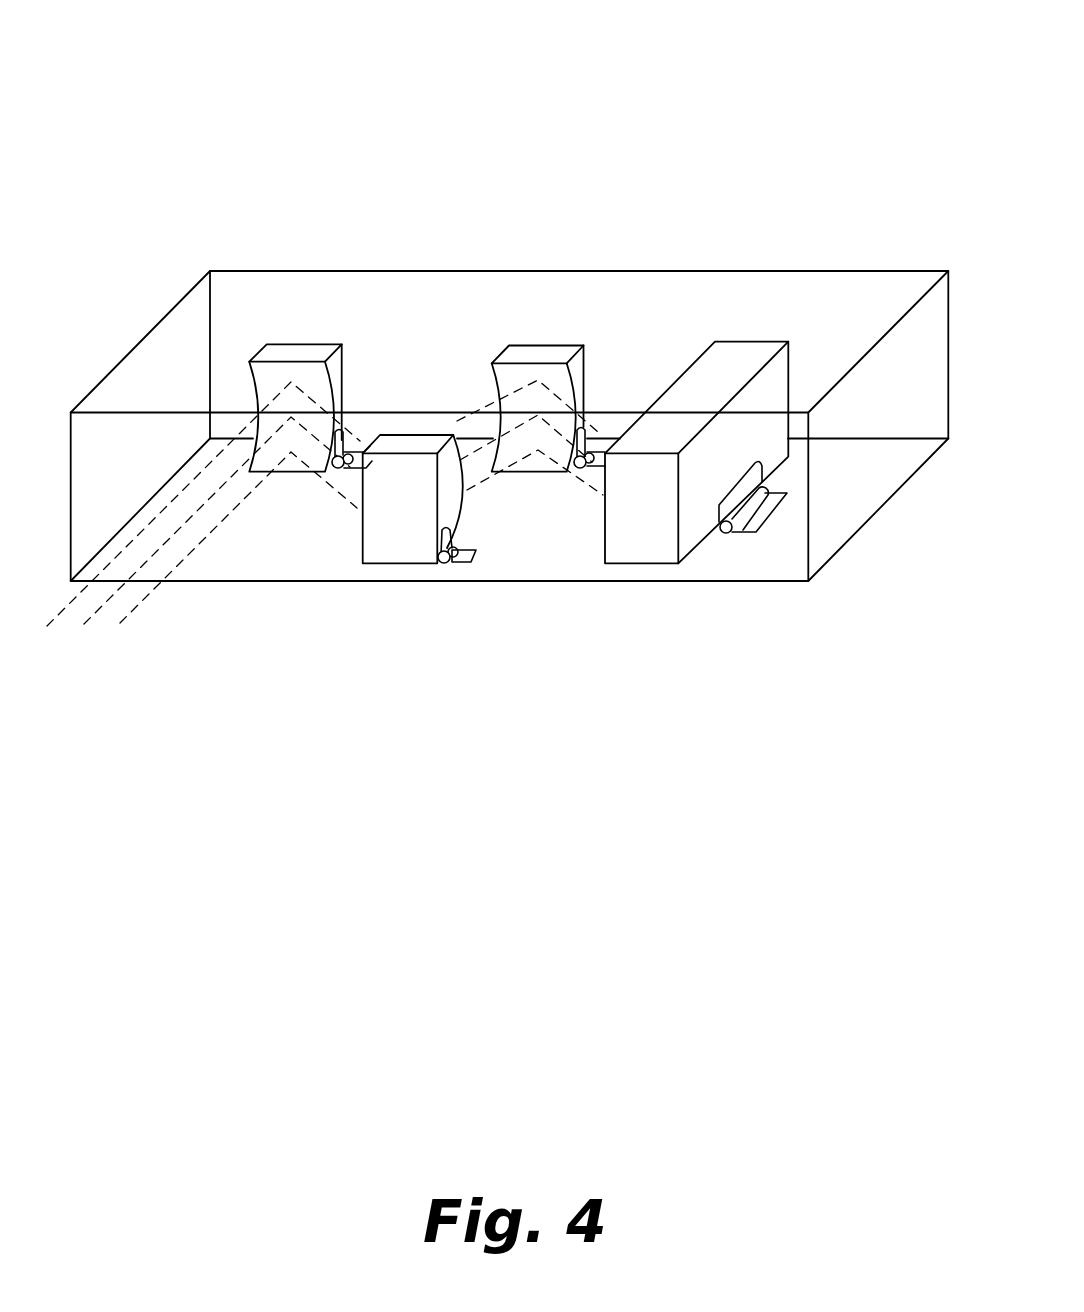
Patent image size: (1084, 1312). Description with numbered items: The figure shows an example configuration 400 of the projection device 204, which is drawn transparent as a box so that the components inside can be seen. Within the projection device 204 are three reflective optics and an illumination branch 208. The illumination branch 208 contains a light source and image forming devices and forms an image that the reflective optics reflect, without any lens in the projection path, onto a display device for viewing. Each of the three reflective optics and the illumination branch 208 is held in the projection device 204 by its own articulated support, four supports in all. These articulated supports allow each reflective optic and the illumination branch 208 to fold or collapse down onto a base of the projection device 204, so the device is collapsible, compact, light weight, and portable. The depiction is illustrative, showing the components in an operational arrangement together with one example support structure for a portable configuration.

The configuration 400 is at (676, 63).
The projection device 204 is at (527, 270).
The illumination branch 208 is at (737, 358).